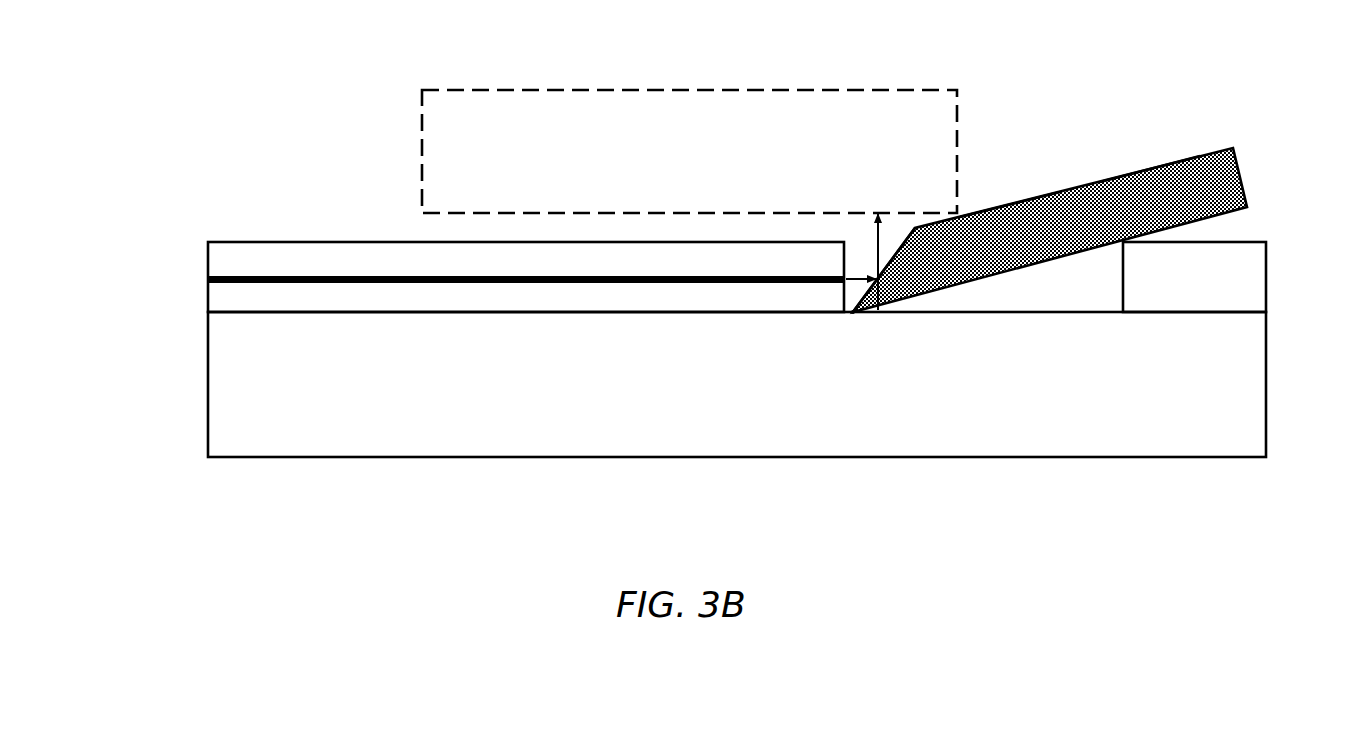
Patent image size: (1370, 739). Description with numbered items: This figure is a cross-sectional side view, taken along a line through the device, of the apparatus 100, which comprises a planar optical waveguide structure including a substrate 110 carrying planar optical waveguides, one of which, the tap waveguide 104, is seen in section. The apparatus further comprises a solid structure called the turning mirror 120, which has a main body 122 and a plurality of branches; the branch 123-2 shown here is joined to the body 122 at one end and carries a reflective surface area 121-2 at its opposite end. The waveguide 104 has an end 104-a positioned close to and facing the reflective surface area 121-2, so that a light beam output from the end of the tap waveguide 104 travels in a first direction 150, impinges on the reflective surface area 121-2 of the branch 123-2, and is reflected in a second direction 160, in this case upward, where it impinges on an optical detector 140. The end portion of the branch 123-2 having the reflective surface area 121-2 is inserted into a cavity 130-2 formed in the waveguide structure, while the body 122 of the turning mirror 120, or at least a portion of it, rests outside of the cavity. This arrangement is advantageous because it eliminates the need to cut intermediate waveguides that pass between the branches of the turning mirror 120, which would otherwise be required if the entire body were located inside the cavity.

The apparatus 100 is at (381, 484).
The waveguide 104 is at (263, 275).
The end of waveguide 104-a is at (840, 284).
The substrate 110 is at (208, 384).
The turning mirror 120 is at (1248, 174).
The reflective surface area 121-2 is at (897, 270).
The main body 122 is at (1168, 164).
The branch 123-2 is at (1034, 198).
The cavity 130-2 is at (1079, 313).
The optical detector 140 is at (688, 90).
The first direction 150 is at (855, 310).
The second direction 160 is at (872, 231).